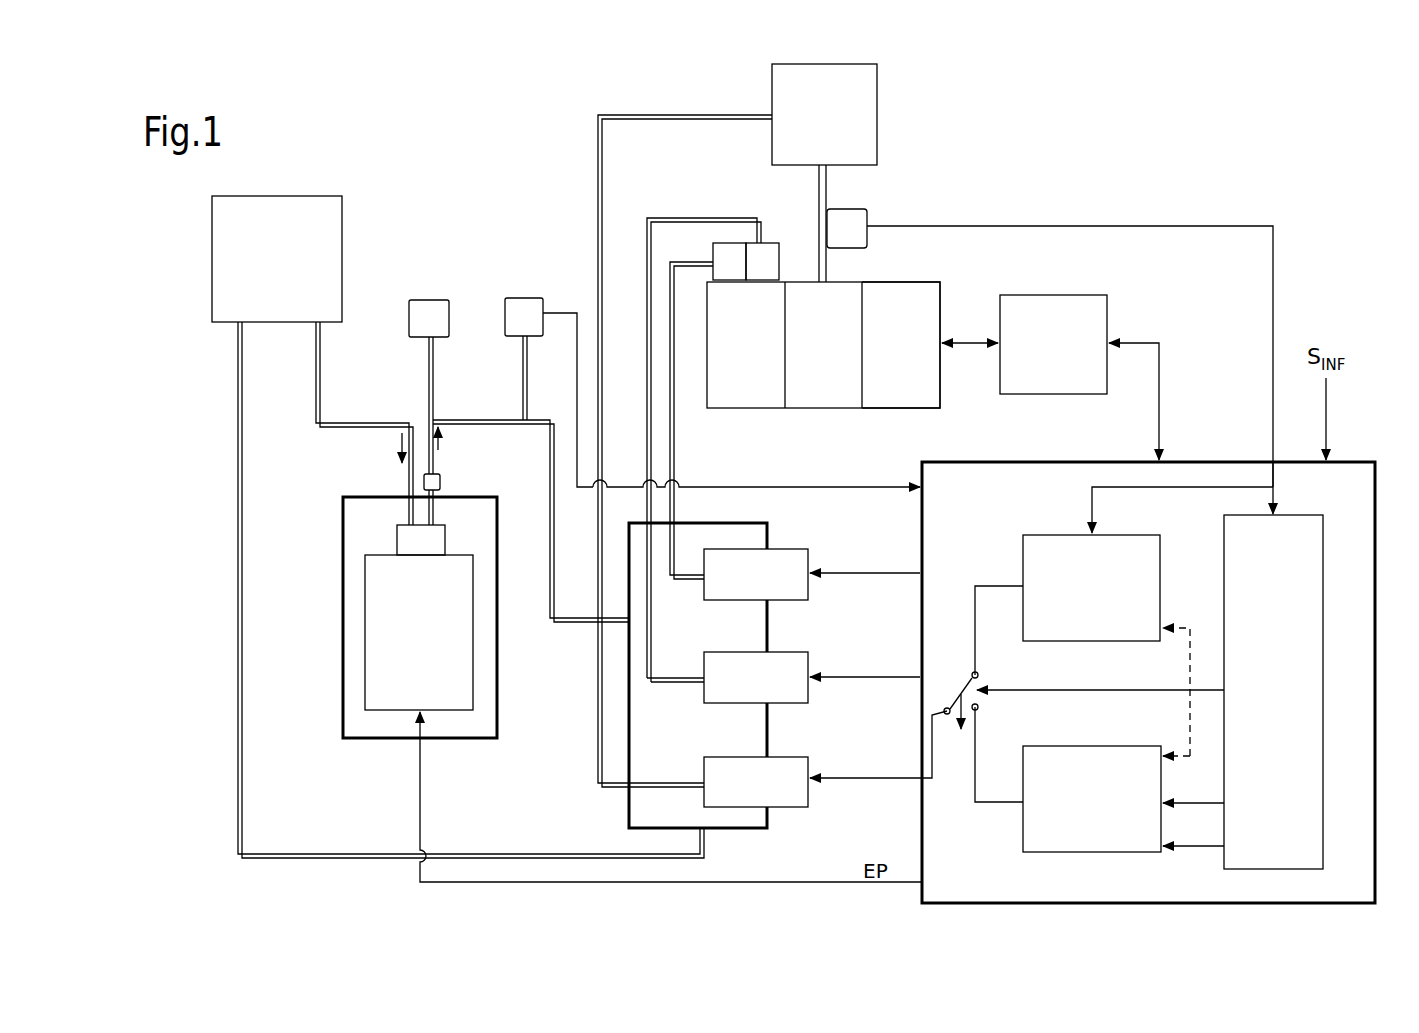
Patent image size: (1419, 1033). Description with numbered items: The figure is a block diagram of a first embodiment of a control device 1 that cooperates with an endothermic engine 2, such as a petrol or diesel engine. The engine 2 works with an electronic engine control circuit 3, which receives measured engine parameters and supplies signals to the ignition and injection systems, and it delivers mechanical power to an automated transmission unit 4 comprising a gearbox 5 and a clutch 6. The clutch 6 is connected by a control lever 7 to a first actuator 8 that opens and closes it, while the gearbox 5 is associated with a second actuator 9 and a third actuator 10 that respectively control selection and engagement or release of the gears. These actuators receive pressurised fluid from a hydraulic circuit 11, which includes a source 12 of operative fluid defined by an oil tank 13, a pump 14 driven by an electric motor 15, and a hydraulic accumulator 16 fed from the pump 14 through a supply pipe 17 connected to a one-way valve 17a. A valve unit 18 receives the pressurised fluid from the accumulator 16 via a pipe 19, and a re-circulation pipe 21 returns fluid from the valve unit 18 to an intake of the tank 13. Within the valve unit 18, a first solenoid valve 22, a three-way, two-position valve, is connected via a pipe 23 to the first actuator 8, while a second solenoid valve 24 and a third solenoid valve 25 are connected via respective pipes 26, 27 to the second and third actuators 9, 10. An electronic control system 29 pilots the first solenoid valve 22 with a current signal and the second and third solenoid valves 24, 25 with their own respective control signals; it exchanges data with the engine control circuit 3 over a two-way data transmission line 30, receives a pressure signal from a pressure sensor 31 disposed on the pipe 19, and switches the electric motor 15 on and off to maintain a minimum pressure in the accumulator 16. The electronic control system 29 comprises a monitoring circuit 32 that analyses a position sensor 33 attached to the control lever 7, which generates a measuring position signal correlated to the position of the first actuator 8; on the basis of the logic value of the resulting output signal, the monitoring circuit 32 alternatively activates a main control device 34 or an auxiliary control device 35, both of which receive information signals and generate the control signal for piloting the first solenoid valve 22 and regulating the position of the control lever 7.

The control device 1 is at (1245, 143).
The endothermic engine 2 is at (892, 400).
The electronic engine control circuit 3 is at (1097, 313).
The automated transmission unit 4 is at (772, 203).
The gearbox 5 is at (750, 402).
The clutch 6 is at (818, 398).
The control lever 7 is at (825, 260).
The first actuator 8 is at (870, 113).
The second actuator 9 is at (770, 255).
The third actuator 10 is at (720, 260).
The hydraulic circuit 11 is at (543, 240).
The source of operative fluid 12 is at (318, 164).
The tank 13 is at (285, 212).
The pump 14 is at (425, 540).
The electric motor 15 is at (378, 686).
The hydraulic accumulator 16 is at (417, 307).
The supply pipe 17 is at (433, 455).
The one-way valve 17a is at (442, 482).
The valve unit 18 is at (582, 783).
The pipe 19 is at (551, 470).
The re-circulation pipe 21 is at (333, 855).
The first solenoid valve 22 is at (793, 795).
The pipe 23 is at (598, 196).
The second solenoid valve 24 is at (793, 688).
The third solenoid valve 25 is at (792, 563).
The pipe 26 is at (676, 218).
The pipe 27 is at (675, 425).
The electronic control system 29 is at (922, 838).
The two-way data transmission line 30 is at (1159, 405).
The pressure sensor 31 is at (518, 307).
The monitoring circuit 32 is at (1228, 855).
The position sensor 33 is at (853, 213).
The main control device 34 is at (1043, 540).
The auxiliary control device 35 is at (1030, 833).